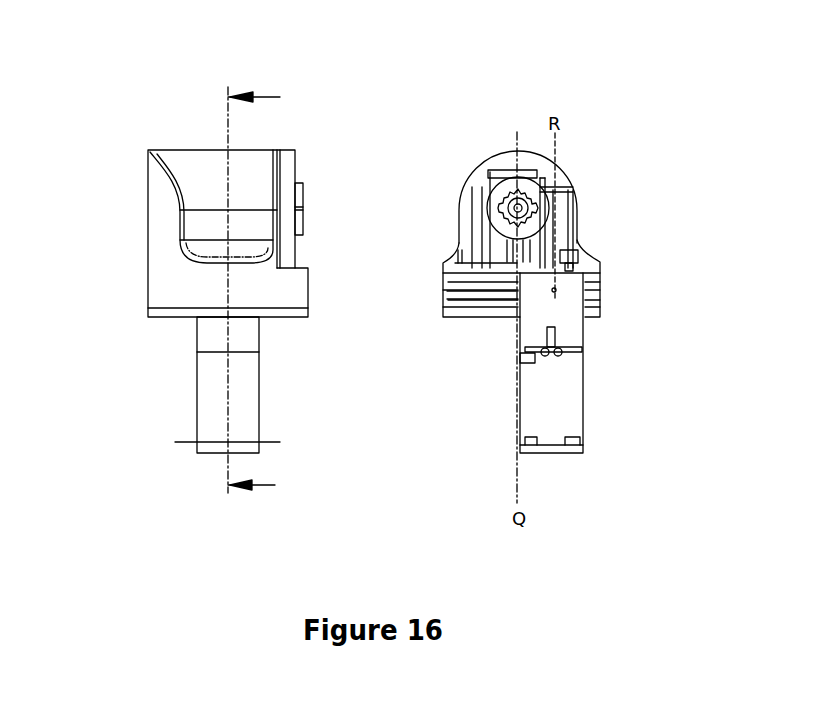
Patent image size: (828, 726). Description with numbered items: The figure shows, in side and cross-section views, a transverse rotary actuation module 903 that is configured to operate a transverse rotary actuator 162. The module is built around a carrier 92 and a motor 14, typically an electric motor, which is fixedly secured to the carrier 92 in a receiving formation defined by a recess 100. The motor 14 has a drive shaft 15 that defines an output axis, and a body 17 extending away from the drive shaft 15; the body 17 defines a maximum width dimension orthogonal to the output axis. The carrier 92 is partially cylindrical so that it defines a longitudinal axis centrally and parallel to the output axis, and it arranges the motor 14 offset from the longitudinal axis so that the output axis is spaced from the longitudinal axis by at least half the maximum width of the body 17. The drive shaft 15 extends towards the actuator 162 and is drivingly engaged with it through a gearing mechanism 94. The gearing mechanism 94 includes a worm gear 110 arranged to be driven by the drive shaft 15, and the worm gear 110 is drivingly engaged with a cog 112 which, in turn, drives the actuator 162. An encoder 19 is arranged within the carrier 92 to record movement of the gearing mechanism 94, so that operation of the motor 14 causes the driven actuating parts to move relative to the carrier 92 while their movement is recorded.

The transverse rotary actuation module 903 is at (132, 117).
The transverse rotary actuator 162 is at (296, 167).
The carrier 92 is at (152, 243).
The motor 14 is at (258, 397).
The encoder 19 is at (489, 181).
The cog 112 is at (500, 210).
The gearing mechanism 94 is at (508, 222).
The worm gear 110 is at (570, 200).
The drive shaft 15 is at (557, 242).
The recess 100 is at (479, 303).
The body 17 is at (551, 365).